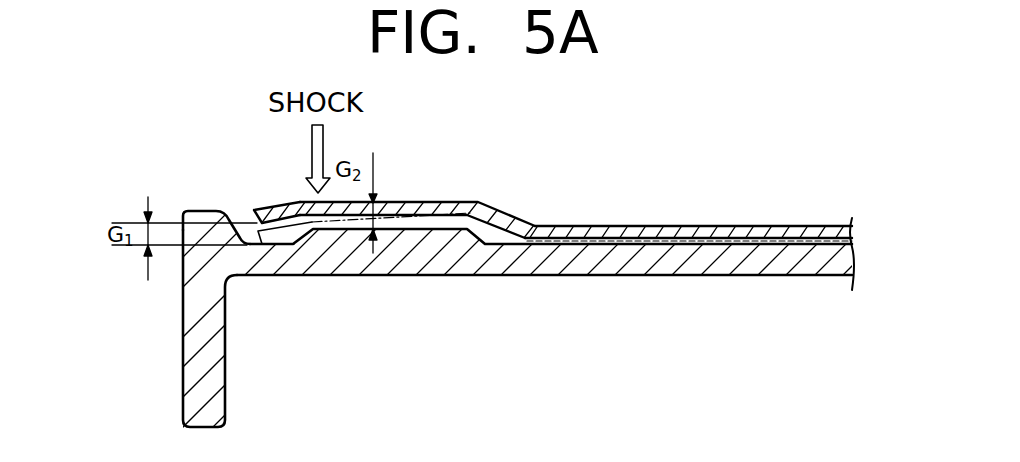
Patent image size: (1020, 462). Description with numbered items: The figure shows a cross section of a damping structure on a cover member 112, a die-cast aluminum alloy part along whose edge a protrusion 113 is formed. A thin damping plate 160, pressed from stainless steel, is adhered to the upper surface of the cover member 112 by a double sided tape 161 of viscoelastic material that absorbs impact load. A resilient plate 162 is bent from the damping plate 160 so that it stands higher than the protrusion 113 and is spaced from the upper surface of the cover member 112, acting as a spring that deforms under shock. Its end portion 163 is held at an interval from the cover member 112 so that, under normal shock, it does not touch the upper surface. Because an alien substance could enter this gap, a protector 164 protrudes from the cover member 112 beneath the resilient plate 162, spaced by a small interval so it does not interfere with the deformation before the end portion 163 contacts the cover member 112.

The cover member 112 is at (182, 358).
The protrusion 113 is at (197, 212).
The damping plate 160 is at (638, 226).
The double sided tape 161 is at (713, 240).
The resilient plate 162 is at (448, 202).
The end portion 163 is at (282, 201).
The protector 164 is at (420, 246).